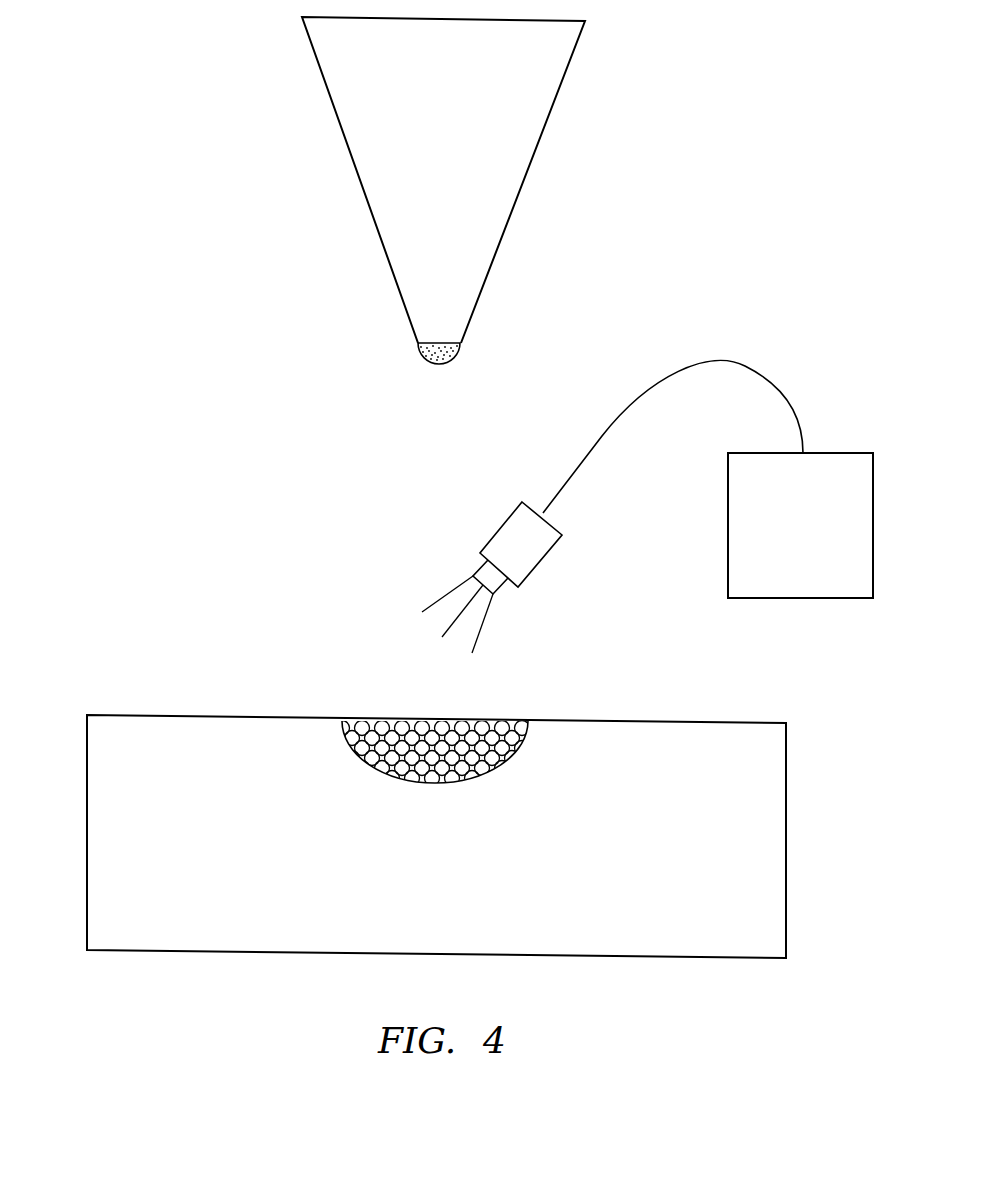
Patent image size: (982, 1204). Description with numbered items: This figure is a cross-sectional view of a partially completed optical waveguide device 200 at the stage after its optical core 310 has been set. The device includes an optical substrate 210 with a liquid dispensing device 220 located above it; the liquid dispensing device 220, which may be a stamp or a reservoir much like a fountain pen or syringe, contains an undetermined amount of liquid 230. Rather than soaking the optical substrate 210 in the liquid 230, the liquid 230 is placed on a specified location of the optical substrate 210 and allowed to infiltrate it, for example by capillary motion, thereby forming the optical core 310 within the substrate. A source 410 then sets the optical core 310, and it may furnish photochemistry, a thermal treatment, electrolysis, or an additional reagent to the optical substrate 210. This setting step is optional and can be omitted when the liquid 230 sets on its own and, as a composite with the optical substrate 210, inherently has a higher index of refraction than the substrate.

The optical waveguide device 200 is at (195, 656).
The optical substrate 210 is at (100, 830).
The liquid dispensing device 220 is at (360, 210).
The liquid 230 is at (441, 343).
The optical core 310 is at (490, 757).
The source 410 is at (552, 561).